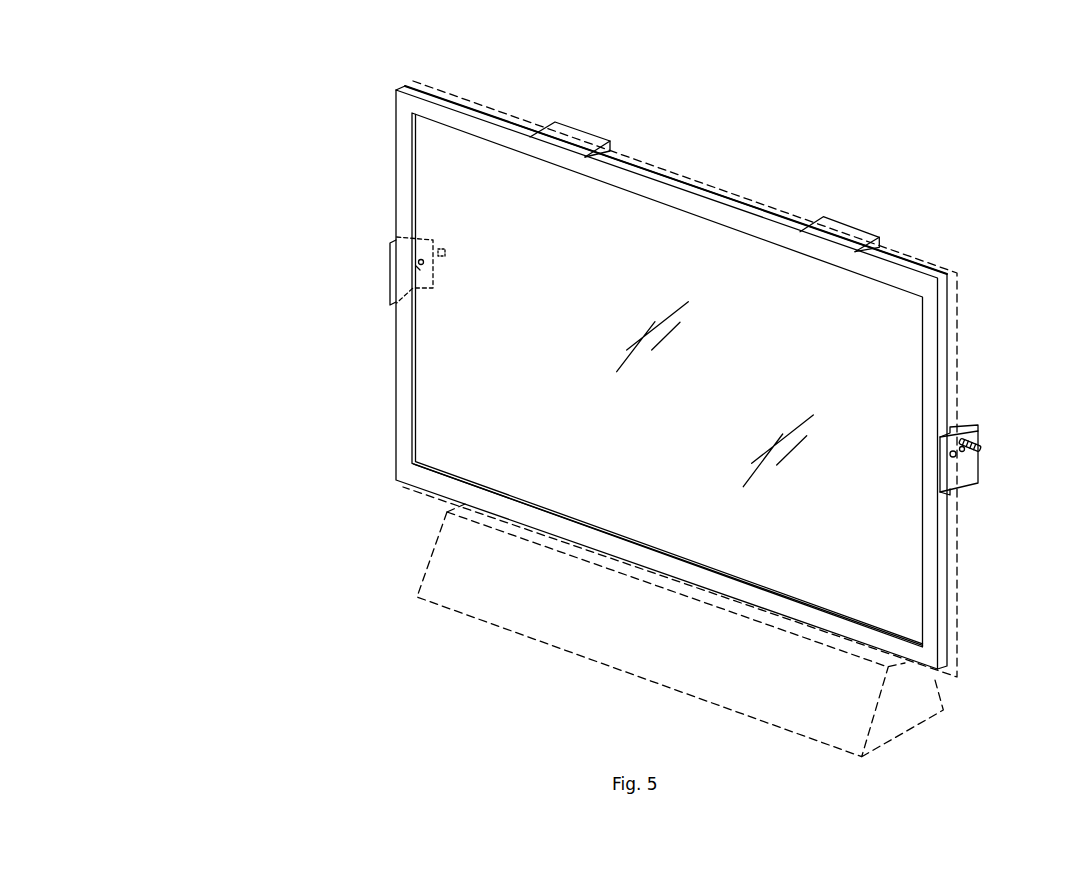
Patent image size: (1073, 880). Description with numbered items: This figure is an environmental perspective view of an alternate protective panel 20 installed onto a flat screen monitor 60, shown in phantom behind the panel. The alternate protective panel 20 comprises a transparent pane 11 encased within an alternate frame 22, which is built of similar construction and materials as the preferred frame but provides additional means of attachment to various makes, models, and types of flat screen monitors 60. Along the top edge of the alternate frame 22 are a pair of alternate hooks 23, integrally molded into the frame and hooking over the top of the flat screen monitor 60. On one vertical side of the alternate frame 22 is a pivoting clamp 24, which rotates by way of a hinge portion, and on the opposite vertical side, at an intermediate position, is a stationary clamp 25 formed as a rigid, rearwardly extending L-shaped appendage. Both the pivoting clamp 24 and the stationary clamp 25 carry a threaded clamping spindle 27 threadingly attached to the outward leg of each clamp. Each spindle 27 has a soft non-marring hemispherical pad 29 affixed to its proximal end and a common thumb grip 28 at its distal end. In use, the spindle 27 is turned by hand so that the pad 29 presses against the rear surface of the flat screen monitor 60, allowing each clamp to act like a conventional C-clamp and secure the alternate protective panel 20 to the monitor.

The transparent pane 11 is at (872, 332).
The alternate protective panel 20 is at (207, 120).
The alternate frame 22 is at (668, 197).
The alternate hooks 23 is at (583, 140).
The pivoting clamp 24 is at (965, 427).
The stationary clamp 25 is at (393, 265).
The threaded clamping spindle 27 is at (425, 262).
The thumb grip 28 is at (442, 252).
The hemispherical pad 29 is at (417, 268).
The flat screen monitor 60 is at (460, 97).